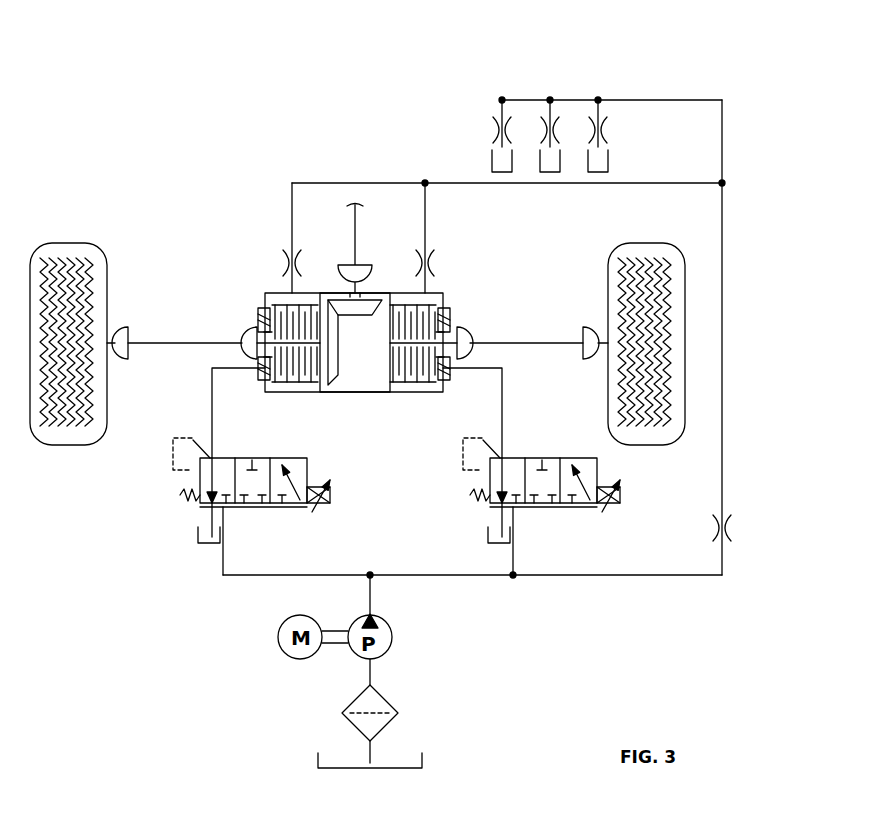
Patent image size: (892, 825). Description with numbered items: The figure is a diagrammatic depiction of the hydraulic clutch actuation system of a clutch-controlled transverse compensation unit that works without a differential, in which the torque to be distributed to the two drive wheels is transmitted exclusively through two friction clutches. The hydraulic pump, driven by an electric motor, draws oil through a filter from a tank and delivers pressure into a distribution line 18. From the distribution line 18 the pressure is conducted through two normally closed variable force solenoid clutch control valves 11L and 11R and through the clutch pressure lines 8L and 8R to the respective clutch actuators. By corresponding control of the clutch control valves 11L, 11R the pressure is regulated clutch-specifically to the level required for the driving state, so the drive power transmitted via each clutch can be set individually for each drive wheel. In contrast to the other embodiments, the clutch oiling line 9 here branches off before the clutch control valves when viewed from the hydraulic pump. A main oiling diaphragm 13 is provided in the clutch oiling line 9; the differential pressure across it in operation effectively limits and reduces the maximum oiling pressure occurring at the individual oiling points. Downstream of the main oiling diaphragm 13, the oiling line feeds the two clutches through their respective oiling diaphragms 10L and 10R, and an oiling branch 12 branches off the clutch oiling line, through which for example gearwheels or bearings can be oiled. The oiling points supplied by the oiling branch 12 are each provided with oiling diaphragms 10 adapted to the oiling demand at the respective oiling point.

The clutch pressure line 8L is at (212, 398).
The clutch pressure line 8R is at (502, 398).
The clutch oiling line 9 is at (725, 320).
The oiling diaphragm 10 is at (497, 130).
The oiling diaphragm 10L is at (286, 264).
The oiling diaphragm 10R is at (430, 262).
The clutch control valve 11L is at (178, 530).
The clutch control valve 11R is at (607, 518).
The oiling branch 12 is at (695, 100).
The main oiling diaphragm 13 is at (728, 532).
The distribution line 18 is at (442, 576).